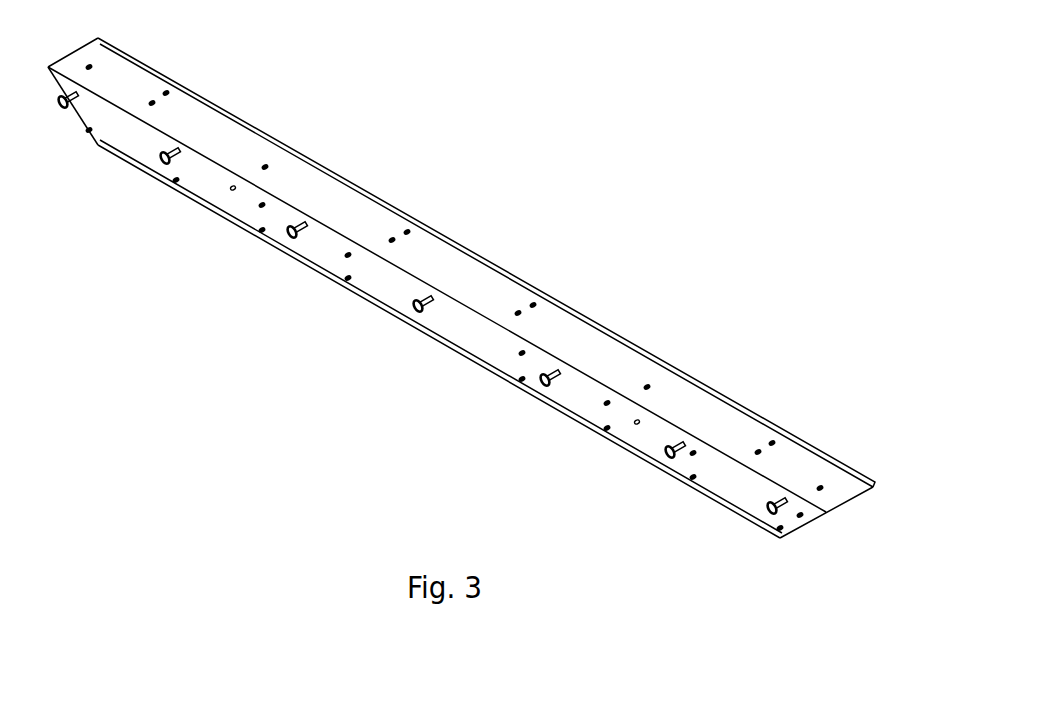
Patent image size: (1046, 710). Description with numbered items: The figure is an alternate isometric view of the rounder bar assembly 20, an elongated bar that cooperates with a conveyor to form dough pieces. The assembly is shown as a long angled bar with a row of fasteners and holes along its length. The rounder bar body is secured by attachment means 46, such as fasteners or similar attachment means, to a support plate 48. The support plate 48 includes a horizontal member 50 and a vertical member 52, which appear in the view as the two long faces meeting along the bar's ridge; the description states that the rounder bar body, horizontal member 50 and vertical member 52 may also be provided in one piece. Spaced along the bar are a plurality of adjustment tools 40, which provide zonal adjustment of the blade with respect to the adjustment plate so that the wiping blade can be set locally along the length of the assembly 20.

The rounder bar assembly 20 is at (461, 288).
The adjustment tools 40 is at (530, 385).
The attachment means 46 is at (258, 235).
The support plate 48 is at (437, 237).
The horizontal member 50 is at (323, 253).
The vertical member 52 is at (587, 342).